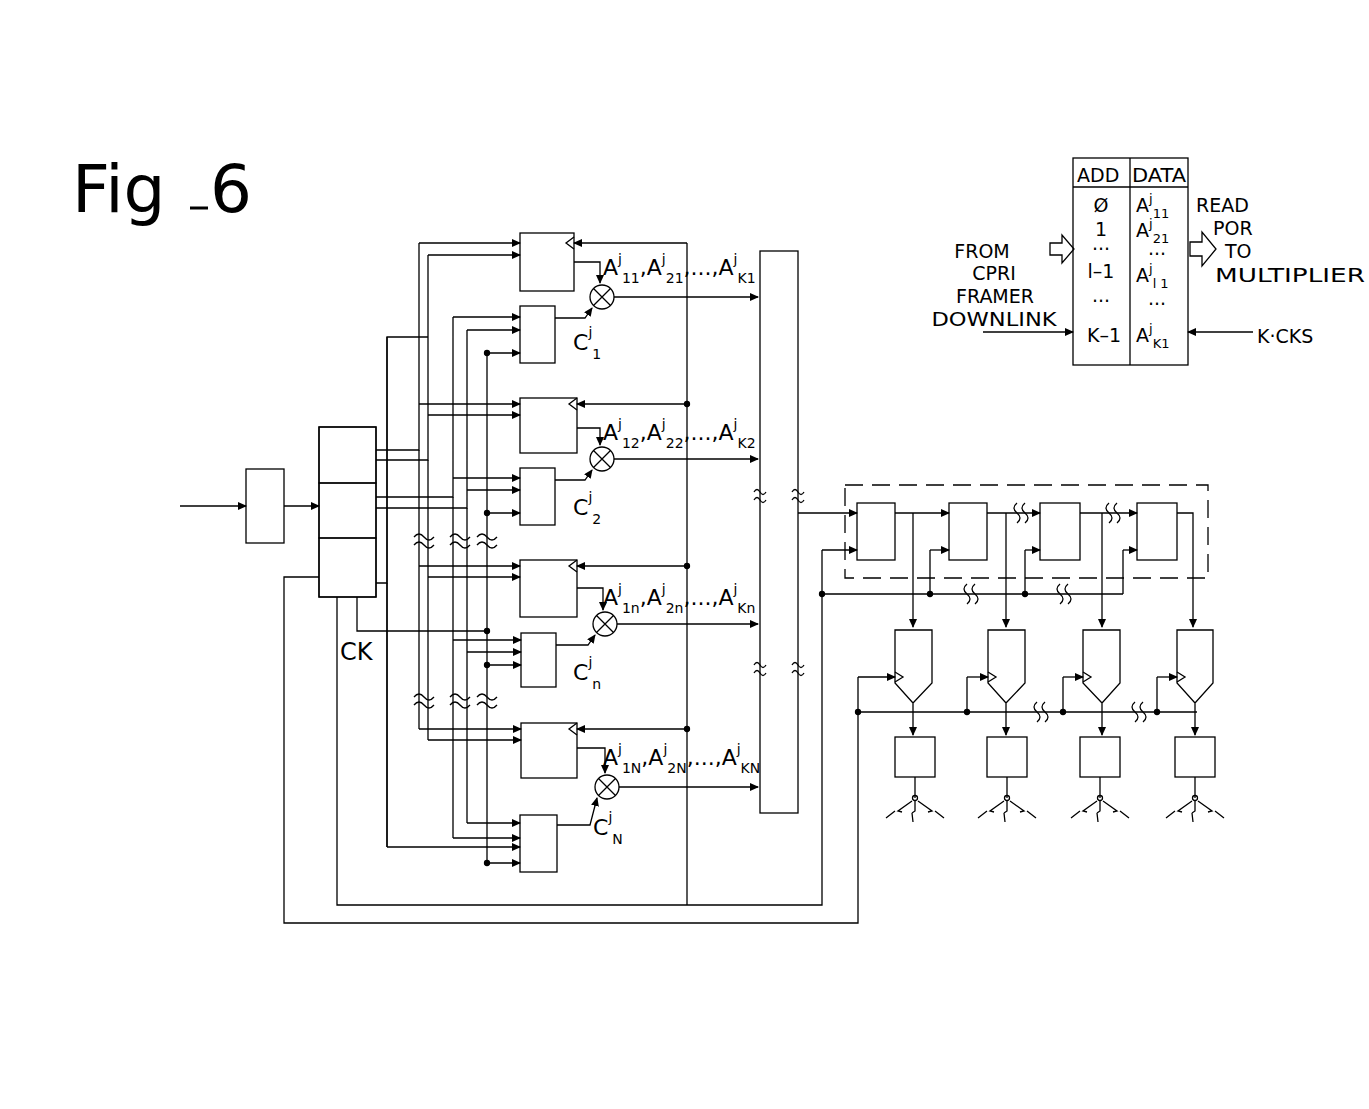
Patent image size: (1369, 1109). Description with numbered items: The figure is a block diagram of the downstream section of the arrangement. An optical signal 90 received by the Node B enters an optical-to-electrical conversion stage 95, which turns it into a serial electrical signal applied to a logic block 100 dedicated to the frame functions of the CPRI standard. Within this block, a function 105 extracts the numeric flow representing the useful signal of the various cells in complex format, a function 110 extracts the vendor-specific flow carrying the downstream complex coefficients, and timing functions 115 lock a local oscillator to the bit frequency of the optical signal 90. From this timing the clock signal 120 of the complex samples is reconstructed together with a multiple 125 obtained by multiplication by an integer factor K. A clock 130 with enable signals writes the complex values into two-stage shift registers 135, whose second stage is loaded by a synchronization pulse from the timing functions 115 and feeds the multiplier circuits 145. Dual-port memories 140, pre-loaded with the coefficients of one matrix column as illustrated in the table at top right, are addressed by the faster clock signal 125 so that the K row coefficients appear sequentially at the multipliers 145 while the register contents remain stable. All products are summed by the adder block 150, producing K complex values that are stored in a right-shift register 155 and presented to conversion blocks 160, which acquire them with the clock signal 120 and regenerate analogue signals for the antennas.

The optical signal 90 is at (187, 517).
The optical-to-electrical conversion stage 95 is at (257, 533).
The logic block 100 is at (350, 424).
The function extracting useful signal flow 105 is at (327, 497).
The function extracting vendor-specific flow 110 is at (327, 443).
The timing functions 115 is at (327, 587).
The clock signal CKS 120 is at (281, 807).
The multiple clock signal 125 is at (335, 770).
The clock 130 is at (387, 635).
The registers 135 is at (555, 348).
The dual-port memories 140 is at (547, 231).
The multiplier circuits 145 is at (612, 306).
The adder block 150 is at (800, 455).
The right-shift register 155 is at (1210, 493).
The conversion blocks 160 is at (903, 655).